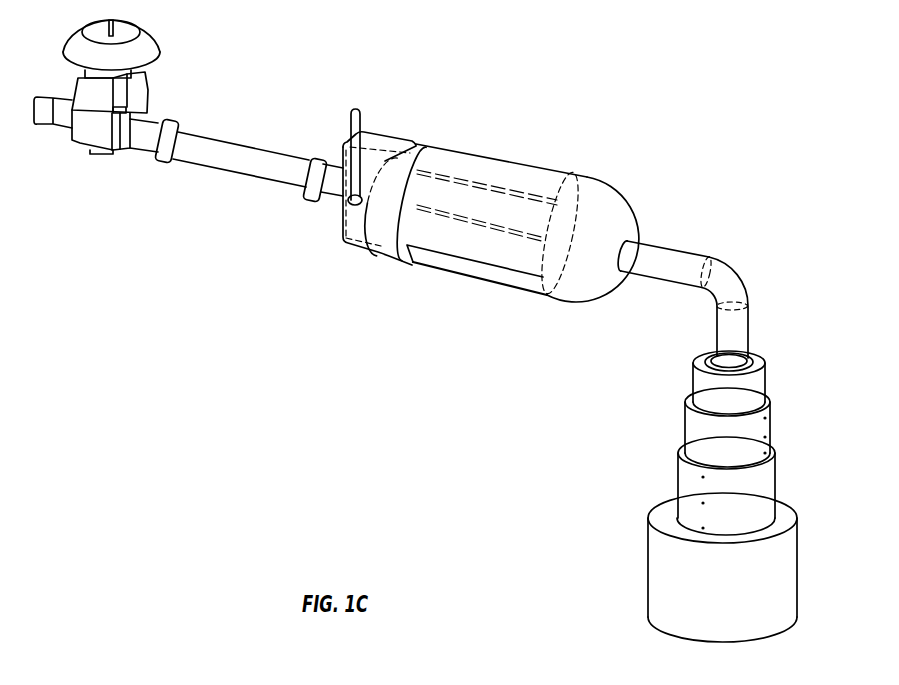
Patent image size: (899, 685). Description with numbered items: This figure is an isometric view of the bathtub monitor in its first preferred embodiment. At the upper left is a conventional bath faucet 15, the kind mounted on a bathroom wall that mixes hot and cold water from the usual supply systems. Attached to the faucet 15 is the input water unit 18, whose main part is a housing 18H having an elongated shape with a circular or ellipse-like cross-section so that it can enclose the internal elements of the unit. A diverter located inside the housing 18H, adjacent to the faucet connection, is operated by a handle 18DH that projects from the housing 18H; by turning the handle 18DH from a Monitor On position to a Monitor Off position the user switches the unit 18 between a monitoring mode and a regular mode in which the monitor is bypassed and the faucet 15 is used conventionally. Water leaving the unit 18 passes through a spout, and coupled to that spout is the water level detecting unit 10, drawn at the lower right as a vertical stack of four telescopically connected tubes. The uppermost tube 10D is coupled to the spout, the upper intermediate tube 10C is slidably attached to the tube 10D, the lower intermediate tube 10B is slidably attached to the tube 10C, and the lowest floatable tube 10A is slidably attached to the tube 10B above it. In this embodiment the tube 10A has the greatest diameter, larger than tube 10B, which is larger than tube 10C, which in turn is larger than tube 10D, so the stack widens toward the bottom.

The bath faucet 15 is at (177, 37).
The input water unit 18 is at (485, 305).
The housing 18H is at (433, 268).
The handle 18DH is at (362, 113).
The water level detecting unit 10 is at (712, 496).
The lowest floatable tube 10A is at (797, 557).
The lower intermediate tube 10B is at (773, 482).
The upper intermediate tube 10C is at (767, 435).
The uppermost tube 10D is at (767, 383).